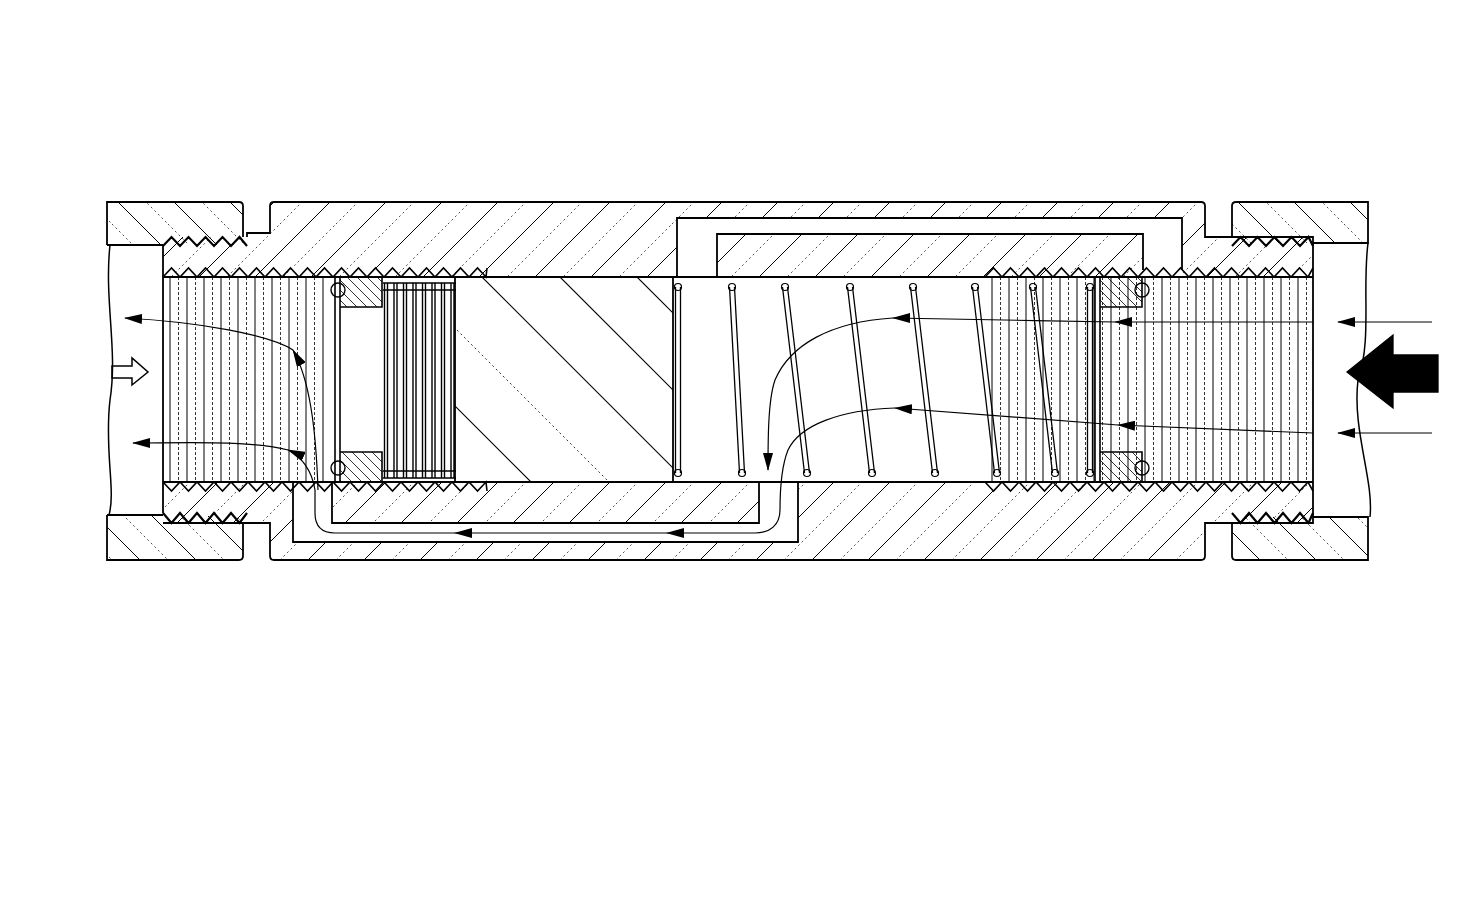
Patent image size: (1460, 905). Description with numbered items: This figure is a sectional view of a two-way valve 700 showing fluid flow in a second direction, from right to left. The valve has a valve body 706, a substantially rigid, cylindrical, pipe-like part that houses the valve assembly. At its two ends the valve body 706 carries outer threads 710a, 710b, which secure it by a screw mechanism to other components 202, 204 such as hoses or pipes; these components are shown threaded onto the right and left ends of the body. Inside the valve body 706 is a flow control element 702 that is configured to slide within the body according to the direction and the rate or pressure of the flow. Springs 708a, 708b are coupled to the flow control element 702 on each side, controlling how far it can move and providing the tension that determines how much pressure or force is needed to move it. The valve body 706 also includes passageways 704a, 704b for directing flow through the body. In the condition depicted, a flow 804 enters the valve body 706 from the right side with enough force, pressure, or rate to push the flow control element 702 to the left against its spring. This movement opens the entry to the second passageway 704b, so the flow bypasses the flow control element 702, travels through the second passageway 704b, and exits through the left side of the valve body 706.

The two-way valve 700 is at (696, 142).
The flow control element 702 is at (548, 391).
The first passageway 704a is at (985, 228).
The second passageway 704b is at (327, 540).
The valve body 706 is at (323, 210).
The first spring 708a is at (937, 485).
The second spring 708b is at (430, 268).
The first outer threads 710a is at (1282, 235).
The second outer threads 710b is at (212, 235).
The first component 202 is at (1353, 208).
The second component 204 is at (153, 210).
The flow 804 is at (1425, 360).